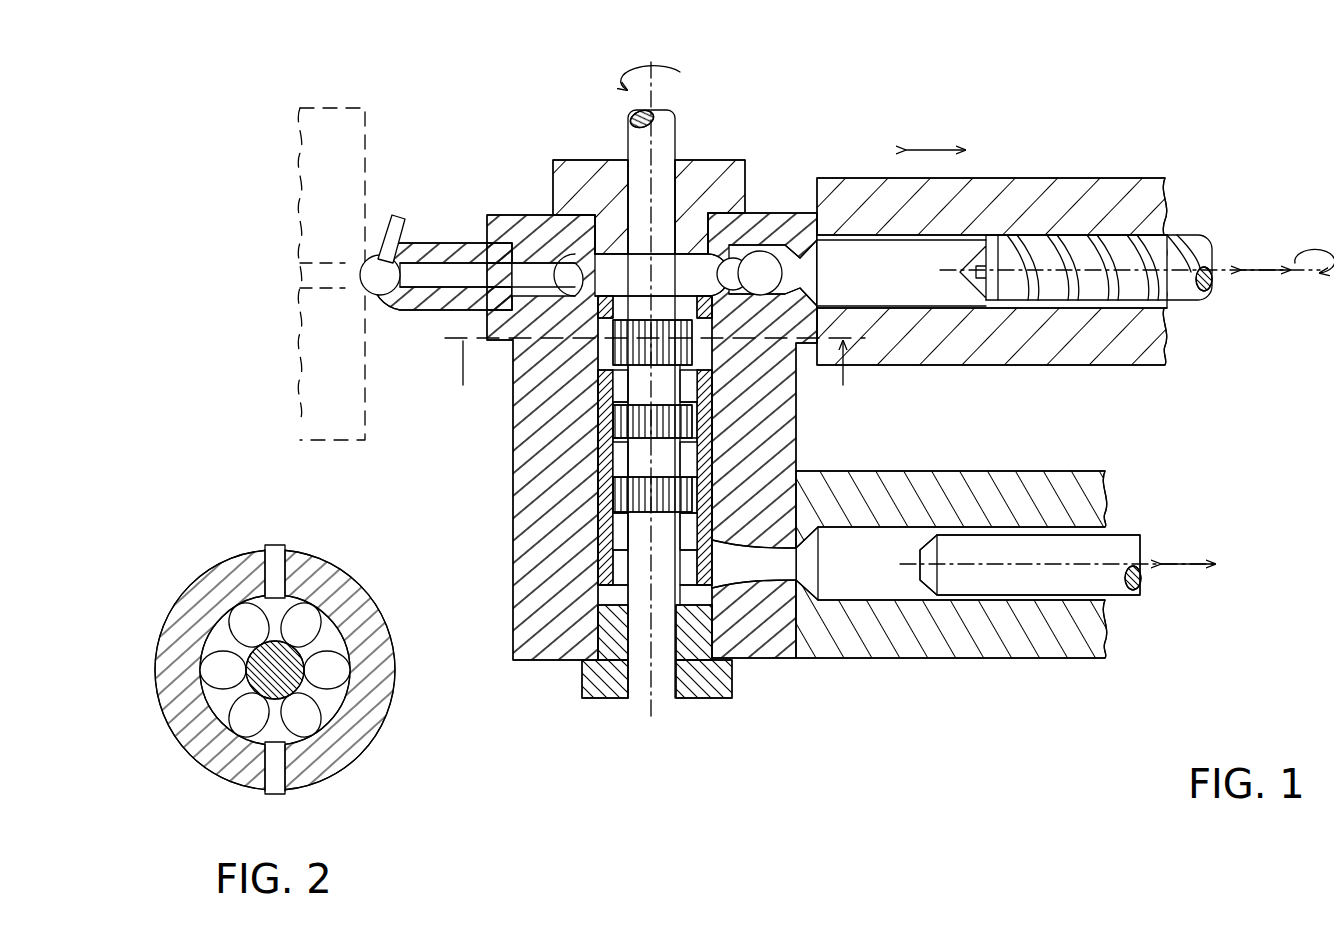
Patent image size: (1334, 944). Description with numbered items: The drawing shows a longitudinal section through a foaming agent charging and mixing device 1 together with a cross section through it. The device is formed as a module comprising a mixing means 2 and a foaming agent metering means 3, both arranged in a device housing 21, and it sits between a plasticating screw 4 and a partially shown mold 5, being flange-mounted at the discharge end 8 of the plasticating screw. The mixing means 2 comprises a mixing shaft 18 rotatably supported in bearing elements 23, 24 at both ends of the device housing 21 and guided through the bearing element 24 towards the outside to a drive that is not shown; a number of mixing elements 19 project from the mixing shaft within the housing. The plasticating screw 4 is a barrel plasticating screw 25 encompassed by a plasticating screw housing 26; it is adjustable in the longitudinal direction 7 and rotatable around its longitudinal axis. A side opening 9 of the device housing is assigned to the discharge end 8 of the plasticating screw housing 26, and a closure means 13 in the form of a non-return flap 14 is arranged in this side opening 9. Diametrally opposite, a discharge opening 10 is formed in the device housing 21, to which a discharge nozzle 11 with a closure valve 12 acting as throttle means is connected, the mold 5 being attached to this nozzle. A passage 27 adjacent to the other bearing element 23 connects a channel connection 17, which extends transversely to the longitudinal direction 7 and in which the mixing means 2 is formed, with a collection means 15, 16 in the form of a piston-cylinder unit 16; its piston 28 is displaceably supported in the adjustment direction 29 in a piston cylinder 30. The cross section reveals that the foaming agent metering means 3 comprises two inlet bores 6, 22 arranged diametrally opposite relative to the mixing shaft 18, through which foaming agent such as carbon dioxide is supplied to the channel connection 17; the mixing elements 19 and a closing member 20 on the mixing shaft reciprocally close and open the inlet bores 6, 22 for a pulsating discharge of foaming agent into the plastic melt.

In FIG. 1, the foaming agent charging and mixing device 1 is at (712, 68).
In FIG. 1, the mixing means 2 is at (590, 556).
In FIG. 2, the foaming agent metering means 3 is at (263, 667).
In FIG. 1, the plasticating screw 4 is at (1012, 162).
In FIG. 1, the mold 5 is at (335, 102).
In FIG. 2, the inlet bore 6 is at (272, 560).
In FIG. 1, the longitudinal direction 7 is at (937, 150).
In FIG. 1, the discharge end 8 is at (850, 258).
In FIG. 1, the side opening 9 is at (800, 258).
In FIG. 1, the discharge opening 10 is at (538, 275).
In FIG. 1, the discharge nozzle 11 is at (430, 230).
In FIG. 1, the closure valve 12 is at (388, 213).
In FIG. 1, the closure means 13 is at (766, 228).
In FIG. 1, the non-return flap 14 is at (760, 285).
In FIG. 1, the second guide housing 15 is at (1120, 498).
In FIG. 1, the piston-cylinder unit 16 is at (951, 619).
In FIG. 1, the channel connection 17 is at (710, 692).
In FIG. 1, the mixing shaft 18 is at (663, 678).
In FIG. 2, the mixing shaft 18 is at (368, 600).
In FIG. 1, the mixing elements 19 is at (622, 494).
In FIG. 2, the mixing elements 19 is at (305, 620).
In FIG. 2, the closing member 20 is at (218, 668).
In FIG. 1, the device housing 21 is at (772, 600).
In FIG. 2, the inlet bore 22 is at (270, 778).
In FIG. 1, the bearing element 23 is at (605, 692).
In FIG. 1, the bearing element 24 is at (597, 183).
In FIG. 1, the barrel plasticating screw 25 is at (1192, 255).
In FIG. 1, the plasticating screw housing 26 is at (1110, 185).
In FIG. 1, the passage 27 is at (790, 585).
In FIG. 1, the piston 28 is at (1130, 546).
In FIG. 1, the adjustment direction 29 is at (1185, 572).
In FIG. 1, the piston cylinder 30 is at (1060, 652).